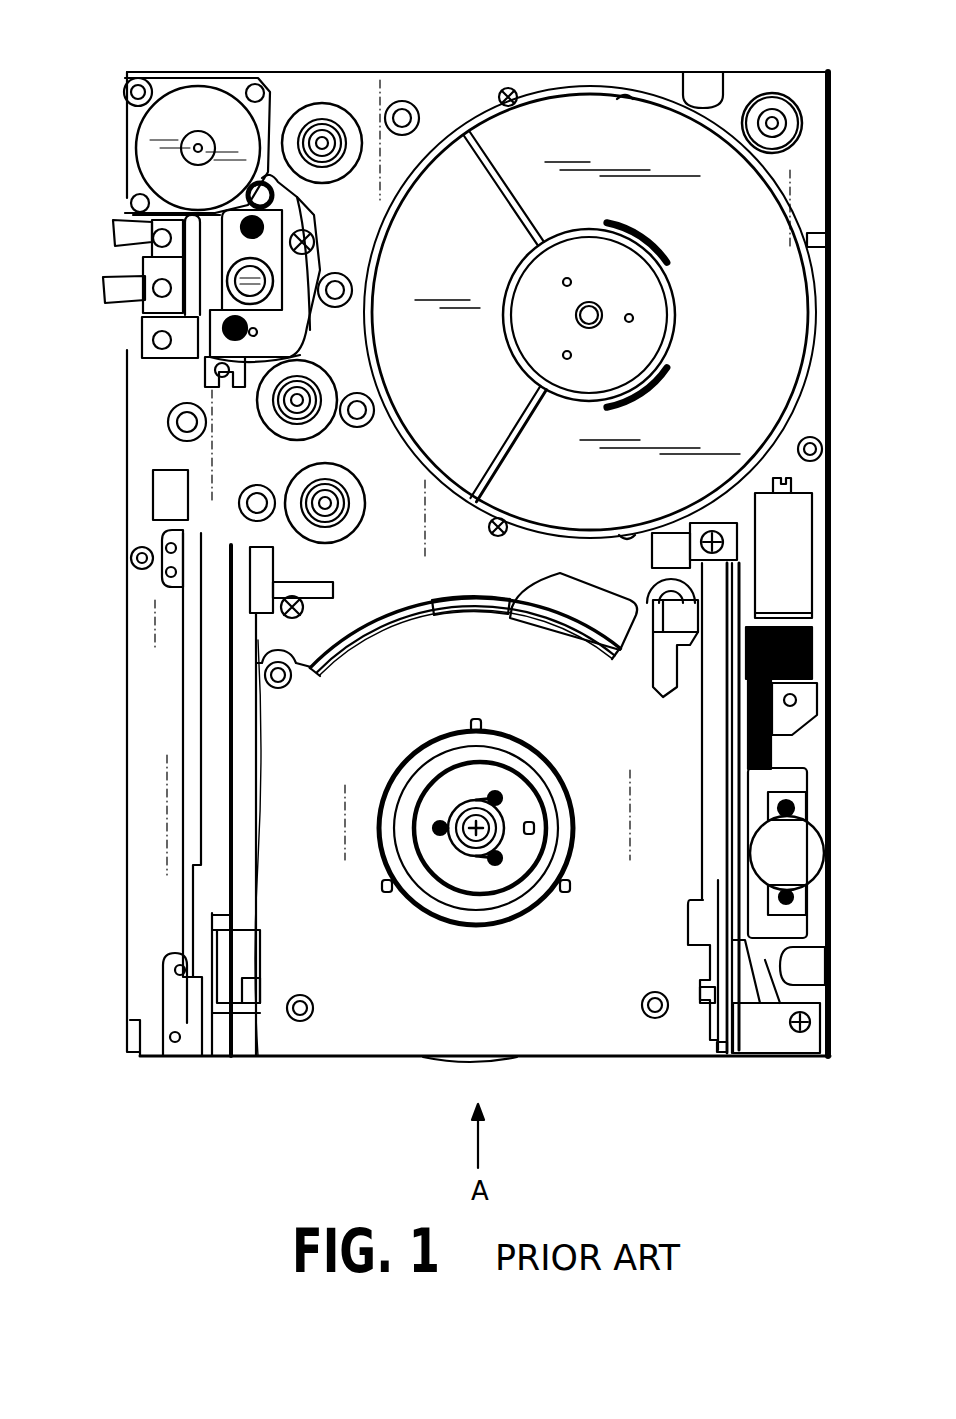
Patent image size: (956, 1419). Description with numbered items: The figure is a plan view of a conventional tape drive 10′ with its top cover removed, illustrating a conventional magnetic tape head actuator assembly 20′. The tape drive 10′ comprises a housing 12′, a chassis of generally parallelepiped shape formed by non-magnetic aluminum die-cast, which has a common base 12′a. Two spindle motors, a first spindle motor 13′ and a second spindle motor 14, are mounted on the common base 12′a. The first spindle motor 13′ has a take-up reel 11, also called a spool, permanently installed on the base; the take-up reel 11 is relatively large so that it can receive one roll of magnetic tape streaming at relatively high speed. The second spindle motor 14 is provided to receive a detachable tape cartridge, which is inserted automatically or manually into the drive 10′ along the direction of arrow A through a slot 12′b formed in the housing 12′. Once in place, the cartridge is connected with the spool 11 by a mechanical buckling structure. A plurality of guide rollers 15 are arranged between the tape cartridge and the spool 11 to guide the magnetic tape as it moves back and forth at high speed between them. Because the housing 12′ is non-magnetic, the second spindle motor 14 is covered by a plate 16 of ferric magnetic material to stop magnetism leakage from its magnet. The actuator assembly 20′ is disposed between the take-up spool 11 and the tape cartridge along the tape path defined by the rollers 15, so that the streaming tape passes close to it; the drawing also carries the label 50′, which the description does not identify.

The tape drive 10′ is at (127, 1058).
The take-up reel 11 is at (753, 205).
The housing 12′ is at (127, 833).
The common base 12′a is at (158, 757).
The slot 12′b is at (717, 927).
The first spindle motor 13′ is at (645, 338).
The second spindle motor 14 is at (512, 855).
The rollers 15 is at (336, 106).
The plate 16 is at (335, 1035).
The magnetic tape head actuator assembly 20′ is at (192, 372).
The head assembly 50′ is at (213, 270).